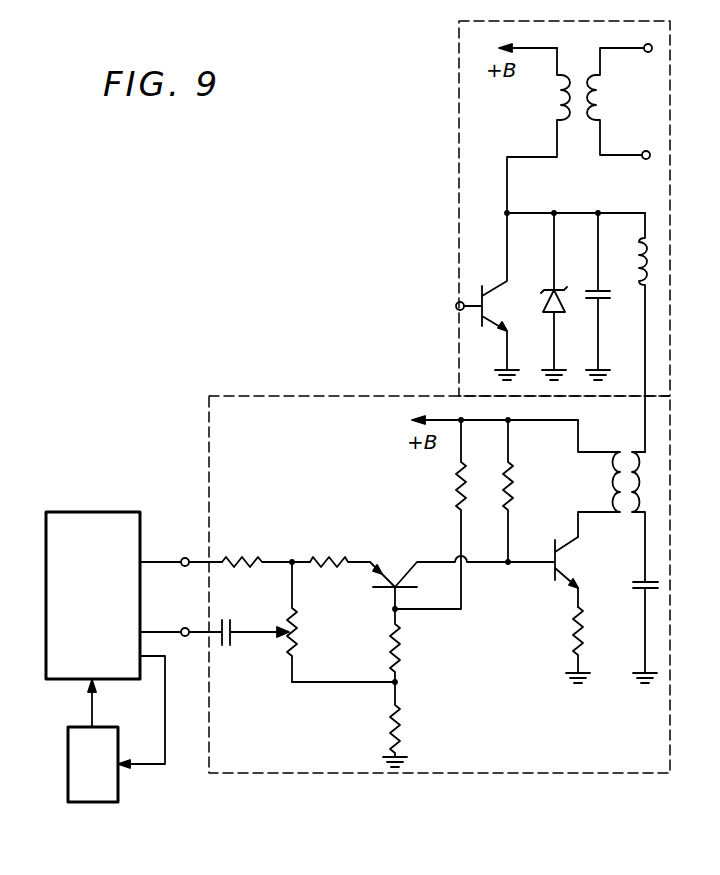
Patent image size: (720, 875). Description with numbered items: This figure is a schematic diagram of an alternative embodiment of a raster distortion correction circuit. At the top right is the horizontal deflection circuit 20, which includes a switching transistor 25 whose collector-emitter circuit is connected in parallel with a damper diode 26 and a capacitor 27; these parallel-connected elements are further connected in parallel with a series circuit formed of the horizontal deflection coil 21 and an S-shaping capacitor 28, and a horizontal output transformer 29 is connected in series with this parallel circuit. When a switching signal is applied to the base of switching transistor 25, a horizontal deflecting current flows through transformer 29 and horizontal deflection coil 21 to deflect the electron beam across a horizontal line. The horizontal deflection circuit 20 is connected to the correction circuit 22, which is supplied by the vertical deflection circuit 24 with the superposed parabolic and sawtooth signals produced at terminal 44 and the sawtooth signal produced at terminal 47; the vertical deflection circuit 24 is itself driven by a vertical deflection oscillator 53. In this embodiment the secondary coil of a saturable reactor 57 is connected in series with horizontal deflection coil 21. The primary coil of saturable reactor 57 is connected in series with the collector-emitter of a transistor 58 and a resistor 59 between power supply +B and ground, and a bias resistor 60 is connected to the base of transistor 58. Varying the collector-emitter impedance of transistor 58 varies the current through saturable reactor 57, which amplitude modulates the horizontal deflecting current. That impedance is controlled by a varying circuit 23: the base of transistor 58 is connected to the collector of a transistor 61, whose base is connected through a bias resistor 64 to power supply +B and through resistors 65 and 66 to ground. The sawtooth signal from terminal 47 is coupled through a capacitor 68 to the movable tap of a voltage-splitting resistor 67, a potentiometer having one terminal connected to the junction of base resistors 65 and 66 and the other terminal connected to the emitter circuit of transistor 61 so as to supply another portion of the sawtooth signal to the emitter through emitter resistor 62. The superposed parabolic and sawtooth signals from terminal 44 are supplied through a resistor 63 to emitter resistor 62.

The horizontal deflection circuit 20 is at (458, 222).
The horizontal deflection coil 21 is at (655, 237).
The correction circuit 22 is at (335, 397).
The varying circuit 23 is at (307, 746).
The vertical deflection circuit 24 is at (73, 512).
The switching transistor 25 is at (482, 290).
The damper diode 26 is at (547, 290).
The capacitor 27 is at (587, 290).
The S-shaping capacitor 28 is at (640, 592).
The horizontal output transformer 29 is at (583, 120).
The terminal 44 is at (193, 558).
The terminal 47 is at (185, 638).
The vertical deflection oscillator 53 is at (93, 803).
The saturable reactor 57 is at (619, 507).
The transistor 58 is at (550, 578).
The resistor 59 is at (573, 633).
The bias resistor 60 is at (513, 485).
The transistor 61 is at (403, 577).
The emitter resistor 62 is at (333, 557).
The resistor 63 is at (247, 557).
The bias resistor 64 is at (458, 485).
The resistor 65 is at (400, 643).
The resistor 66 is at (403, 718).
The voltage-splitting resistor 67 is at (298, 632).
The capacitor 68 is at (228, 642).